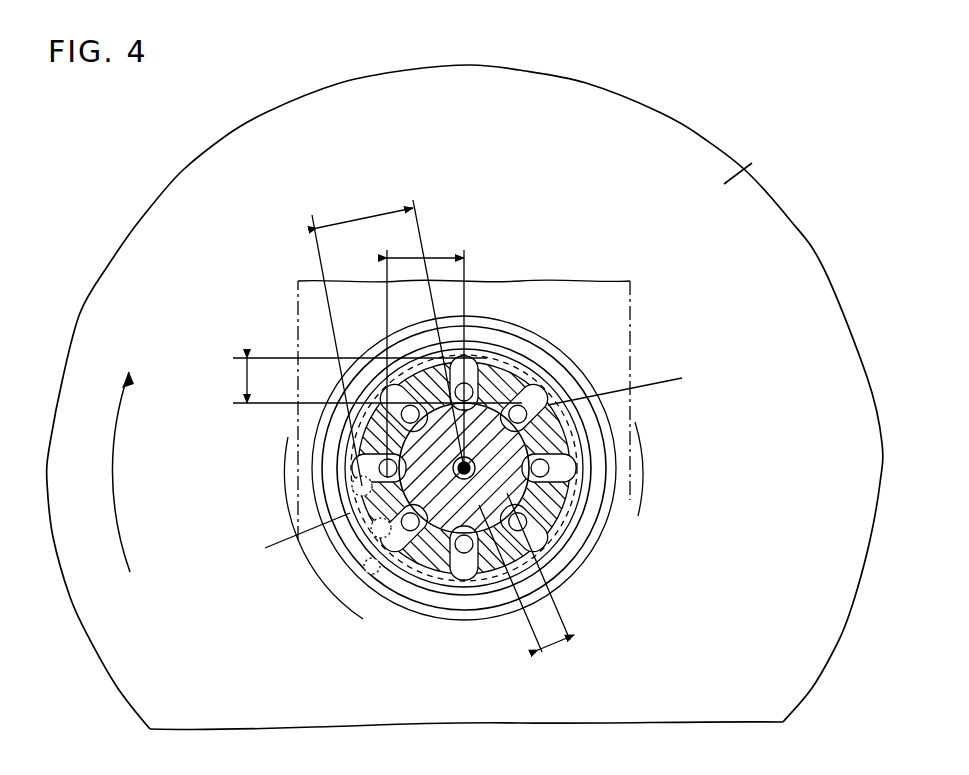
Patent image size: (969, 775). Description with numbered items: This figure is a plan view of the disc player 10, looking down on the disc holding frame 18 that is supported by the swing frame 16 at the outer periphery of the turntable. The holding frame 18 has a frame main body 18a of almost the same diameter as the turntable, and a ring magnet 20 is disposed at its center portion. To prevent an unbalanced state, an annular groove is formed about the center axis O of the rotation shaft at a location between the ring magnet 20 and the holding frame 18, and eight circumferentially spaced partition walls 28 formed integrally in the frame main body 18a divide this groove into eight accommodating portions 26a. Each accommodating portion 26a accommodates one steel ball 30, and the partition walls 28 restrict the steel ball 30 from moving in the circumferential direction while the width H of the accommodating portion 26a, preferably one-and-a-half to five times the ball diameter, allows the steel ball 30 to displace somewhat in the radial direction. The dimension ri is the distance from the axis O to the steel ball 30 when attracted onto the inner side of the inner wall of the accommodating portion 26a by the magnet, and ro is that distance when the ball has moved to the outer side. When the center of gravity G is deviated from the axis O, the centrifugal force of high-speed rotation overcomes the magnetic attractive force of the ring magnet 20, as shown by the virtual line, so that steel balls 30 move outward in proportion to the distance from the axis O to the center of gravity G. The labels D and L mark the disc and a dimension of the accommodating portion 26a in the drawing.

The disc player 10 is at (142, 163).
The swing frame 16 is at (545, 290).
The disc holding frame 18 is at (590, 376).
The frame main body 18a is at (534, 318).
The ring magnet 20 is at (530, 485).
The accommodating portion 26a is at (548, 528).
The partition wall 28 is at (505, 348).
The steel ball 30 is at (352, 478).
The drum D is at (752, 166).
The center of gravity G is at (470, 466).
The center axis O is at (464, 470).
The width of the annular groove H is at (368, 380).
The length L is at (526, 587).
The outer distance of steel ball from axis ro is at (388, 339).
The inner distance of steel ball from axis ri is at (437, 255).